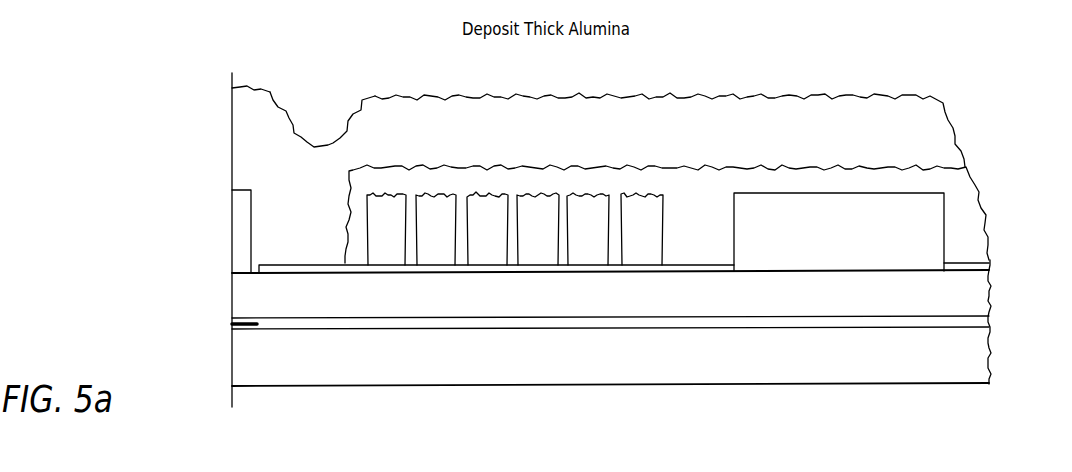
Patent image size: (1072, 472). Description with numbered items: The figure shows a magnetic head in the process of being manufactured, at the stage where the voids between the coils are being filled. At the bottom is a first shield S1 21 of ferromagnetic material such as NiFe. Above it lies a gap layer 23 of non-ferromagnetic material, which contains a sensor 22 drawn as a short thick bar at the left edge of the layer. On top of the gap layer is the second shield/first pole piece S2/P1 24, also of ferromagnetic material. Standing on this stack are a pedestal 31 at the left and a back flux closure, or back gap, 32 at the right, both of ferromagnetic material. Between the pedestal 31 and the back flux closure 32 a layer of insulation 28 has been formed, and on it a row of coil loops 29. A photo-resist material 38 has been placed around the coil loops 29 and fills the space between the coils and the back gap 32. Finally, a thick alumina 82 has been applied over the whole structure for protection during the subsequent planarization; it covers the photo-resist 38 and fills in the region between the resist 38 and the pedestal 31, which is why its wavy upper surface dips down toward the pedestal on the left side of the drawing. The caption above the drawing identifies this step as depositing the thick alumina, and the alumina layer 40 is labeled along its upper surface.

The first shield S1 21 is at (989, 353).
The sensor 22 is at (232, 325).
The gap layer 23 is at (268, 332).
The second shield/first pole piece S2/P1 24 is at (989, 296).
The layer of insulation 28 is at (305, 270).
The coil loops 29 is at (395, 236).
The pedestal 31 is at (233, 236).
The back flux closure (back gap) 32 is at (856, 236).
The photo-resist material 38 is at (706, 236).
The thick alumina layer 40 is at (676, 100).
The thick alumina 82 is at (302, 170).